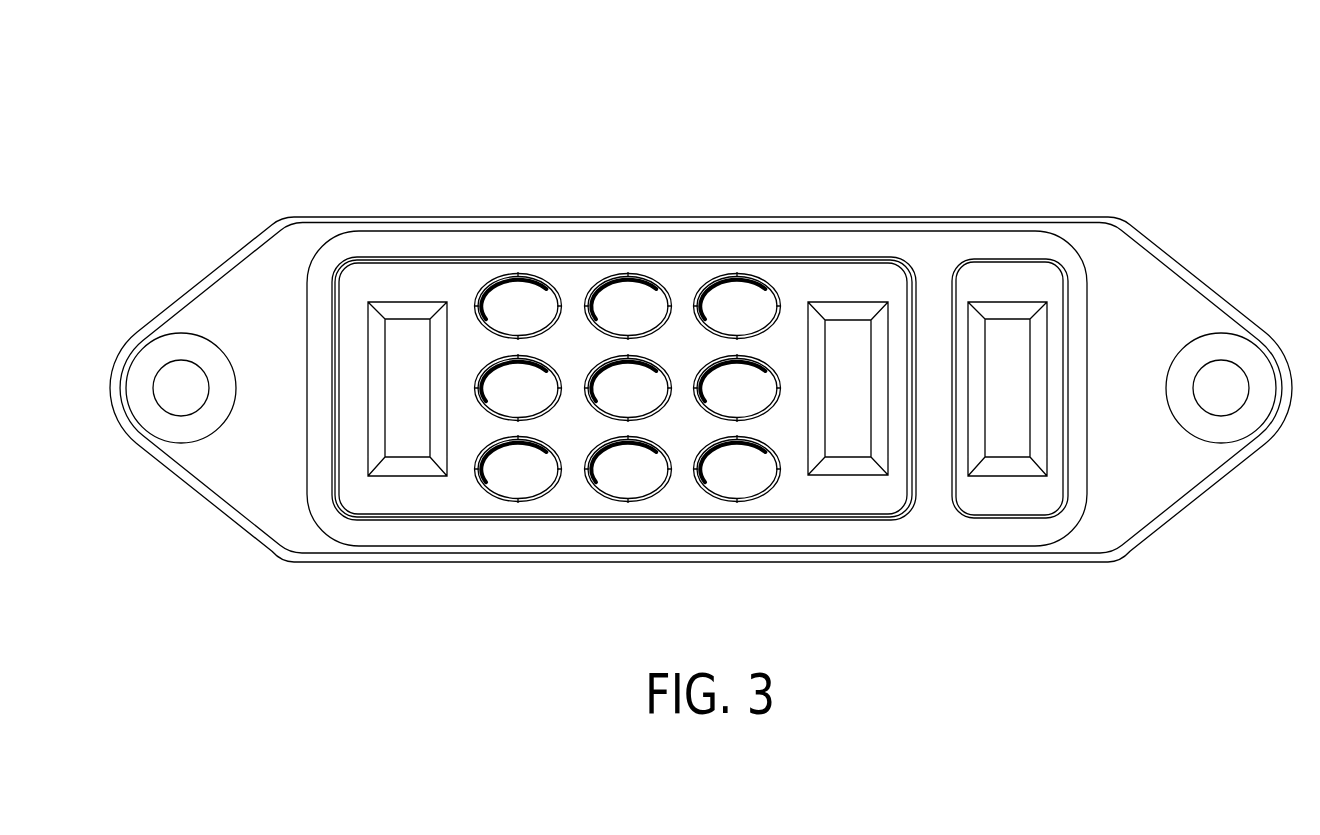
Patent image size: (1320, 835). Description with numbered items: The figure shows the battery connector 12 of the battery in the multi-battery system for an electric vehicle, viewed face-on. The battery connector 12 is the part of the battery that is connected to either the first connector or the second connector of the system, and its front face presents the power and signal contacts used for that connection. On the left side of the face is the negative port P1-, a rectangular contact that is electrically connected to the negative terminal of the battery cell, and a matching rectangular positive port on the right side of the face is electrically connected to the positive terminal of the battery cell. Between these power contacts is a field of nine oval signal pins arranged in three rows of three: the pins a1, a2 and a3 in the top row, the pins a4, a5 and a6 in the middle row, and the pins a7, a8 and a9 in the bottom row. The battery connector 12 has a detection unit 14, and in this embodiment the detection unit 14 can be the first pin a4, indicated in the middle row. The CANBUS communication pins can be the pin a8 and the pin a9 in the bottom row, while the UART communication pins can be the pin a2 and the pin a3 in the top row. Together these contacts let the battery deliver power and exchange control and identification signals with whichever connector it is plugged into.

The battery connector 12 is at (1125, 95).
The detection unit 14 is at (611, 443).
The negative port P1- is at (402, 338).
The pin a1 is at (518, 306).
The pin a2 is at (628, 306).
The pin a3 is at (737, 306).
The first pin a4 is at (518, 388).
The pin a5 is at (628, 388).
The pin a6 is at (737, 388).
The pin a7 is at (518, 469).
The pin a8 is at (628, 469).
The pin a9 is at (737, 469).